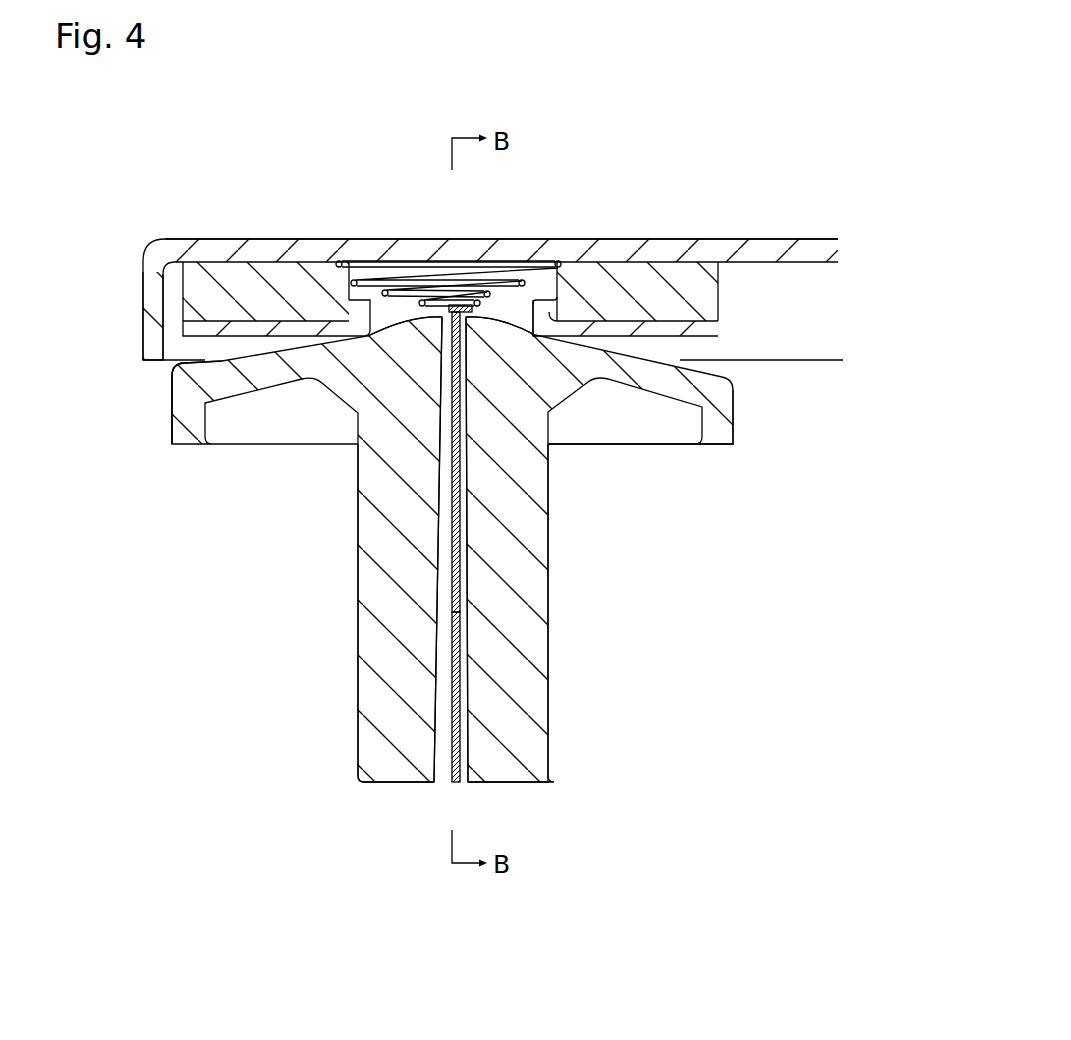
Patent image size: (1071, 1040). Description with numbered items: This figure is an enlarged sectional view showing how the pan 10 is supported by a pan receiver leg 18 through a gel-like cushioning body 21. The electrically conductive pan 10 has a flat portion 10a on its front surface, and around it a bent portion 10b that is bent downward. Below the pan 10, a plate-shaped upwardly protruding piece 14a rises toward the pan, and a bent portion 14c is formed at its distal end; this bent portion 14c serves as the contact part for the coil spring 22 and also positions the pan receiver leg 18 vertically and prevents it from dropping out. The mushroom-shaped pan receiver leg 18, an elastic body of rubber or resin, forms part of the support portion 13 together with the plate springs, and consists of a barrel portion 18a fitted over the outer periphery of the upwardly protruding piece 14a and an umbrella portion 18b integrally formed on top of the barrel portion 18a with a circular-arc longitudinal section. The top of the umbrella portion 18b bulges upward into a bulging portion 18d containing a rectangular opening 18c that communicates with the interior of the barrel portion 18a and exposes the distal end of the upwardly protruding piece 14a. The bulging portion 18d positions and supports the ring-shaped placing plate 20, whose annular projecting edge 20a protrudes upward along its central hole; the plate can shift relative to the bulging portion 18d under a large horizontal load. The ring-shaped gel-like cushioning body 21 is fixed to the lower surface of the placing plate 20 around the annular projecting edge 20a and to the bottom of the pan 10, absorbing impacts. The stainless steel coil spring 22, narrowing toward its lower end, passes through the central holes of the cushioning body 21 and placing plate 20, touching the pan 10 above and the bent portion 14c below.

The pan 10 is at (454, 267).
The flat portion 10a is at (258, 239).
The bent portion 10b is at (143, 302).
The support portion 13 is at (152, 414).
The upwardly protruding piece 14a is at (457, 782).
The bent portion 14c is at (473, 308).
The pan receiver leg 18 is at (504, 477).
The barrel portion 18a is at (549, 598).
The umbrella portion 18b is at (734, 427).
The opening 18c is at (440, 513).
The bulging portion 18d is at (505, 318).
The placing plate 20 is at (488, 272).
The annular projecting edge 20a is at (542, 305).
The gel-like cushioning body 21 is at (690, 272).
The coil spring 22 is at (367, 262).